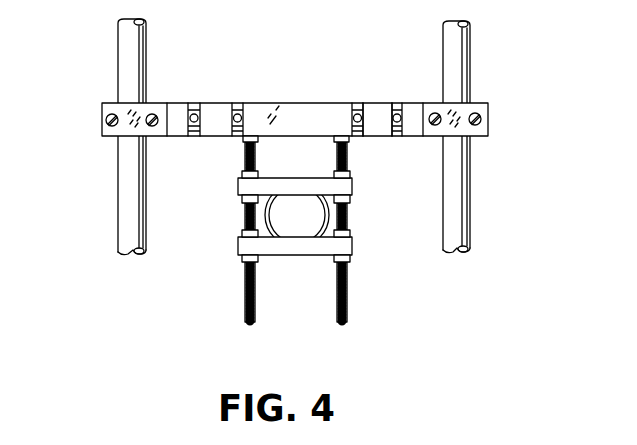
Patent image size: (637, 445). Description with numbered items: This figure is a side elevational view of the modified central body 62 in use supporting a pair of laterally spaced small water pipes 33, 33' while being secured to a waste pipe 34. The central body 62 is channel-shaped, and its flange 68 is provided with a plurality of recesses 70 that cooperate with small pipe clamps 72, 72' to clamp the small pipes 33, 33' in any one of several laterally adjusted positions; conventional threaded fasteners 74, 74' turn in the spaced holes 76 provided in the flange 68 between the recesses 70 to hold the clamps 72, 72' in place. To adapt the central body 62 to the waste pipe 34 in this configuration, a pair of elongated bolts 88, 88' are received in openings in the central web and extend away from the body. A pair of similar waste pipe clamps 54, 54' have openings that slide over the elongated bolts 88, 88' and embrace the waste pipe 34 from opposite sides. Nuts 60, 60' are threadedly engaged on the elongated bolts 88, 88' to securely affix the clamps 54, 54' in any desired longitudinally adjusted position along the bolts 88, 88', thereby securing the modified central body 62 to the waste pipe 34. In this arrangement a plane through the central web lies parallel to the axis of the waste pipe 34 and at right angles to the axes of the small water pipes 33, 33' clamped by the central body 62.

The small pipe 33 is at (488, 137).
The small pipe 33' is at (156, 137).
The modified central body 62 is at (296, 101).
The lower flange 68 is at (327, 122).
The recesses 70 is at (378, 118).
The small pipe clamp 72 is at (474, 102).
The small pipe clamp 72' is at (117, 119).
The threaded fastener 74 is at (477, 124).
The threaded fastener 74' is at (112, 143).
The spaced holes 76 is at (193, 110).
The waste pipe 34 is at (333, 228).
The waste pipe clamp 54 is at (295, 267).
The waste pipe clamp 54' is at (295, 168).
The nuts 60 is at (301, 215).
The nuts 60' is at (274, 218).
The elongated bolt 88 is at (362, 234).
The elongated bolt 88' is at (268, 232).